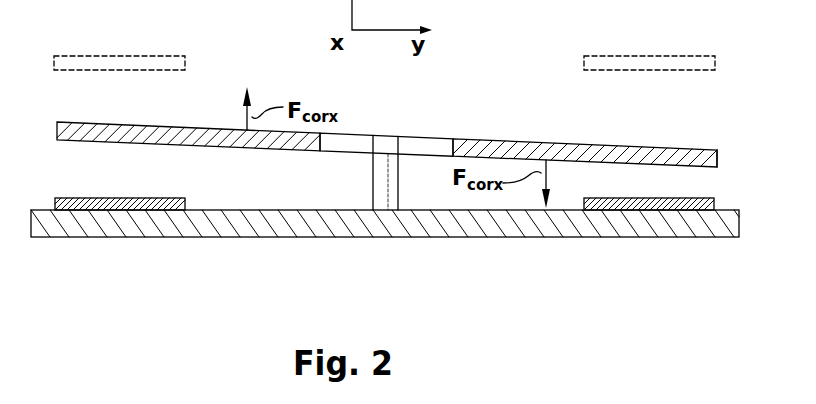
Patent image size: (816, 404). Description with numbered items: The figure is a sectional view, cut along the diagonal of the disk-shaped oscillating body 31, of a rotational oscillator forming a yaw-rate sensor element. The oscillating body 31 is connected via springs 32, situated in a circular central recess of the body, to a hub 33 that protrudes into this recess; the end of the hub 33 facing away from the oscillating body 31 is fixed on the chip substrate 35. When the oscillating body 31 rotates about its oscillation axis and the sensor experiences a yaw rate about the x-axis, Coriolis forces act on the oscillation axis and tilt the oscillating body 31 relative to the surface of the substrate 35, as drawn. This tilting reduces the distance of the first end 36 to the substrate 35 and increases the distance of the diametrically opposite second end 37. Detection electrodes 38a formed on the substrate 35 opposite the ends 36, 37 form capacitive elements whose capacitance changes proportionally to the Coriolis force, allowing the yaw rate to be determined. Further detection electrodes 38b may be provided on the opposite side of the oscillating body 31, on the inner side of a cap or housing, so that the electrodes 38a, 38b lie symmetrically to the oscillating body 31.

The oscillating body 31 is at (505, 143).
The springs 32 is at (420, 140).
The hub 33 is at (380, 178).
The chip substrate 35 is at (504, 222).
The first end or edge 36 is at (703, 157).
The second end or edge 37 is at (68, 128).
The detection electrodes 38a is at (113, 210).
The further detection electrodes 38b is at (113, 63).